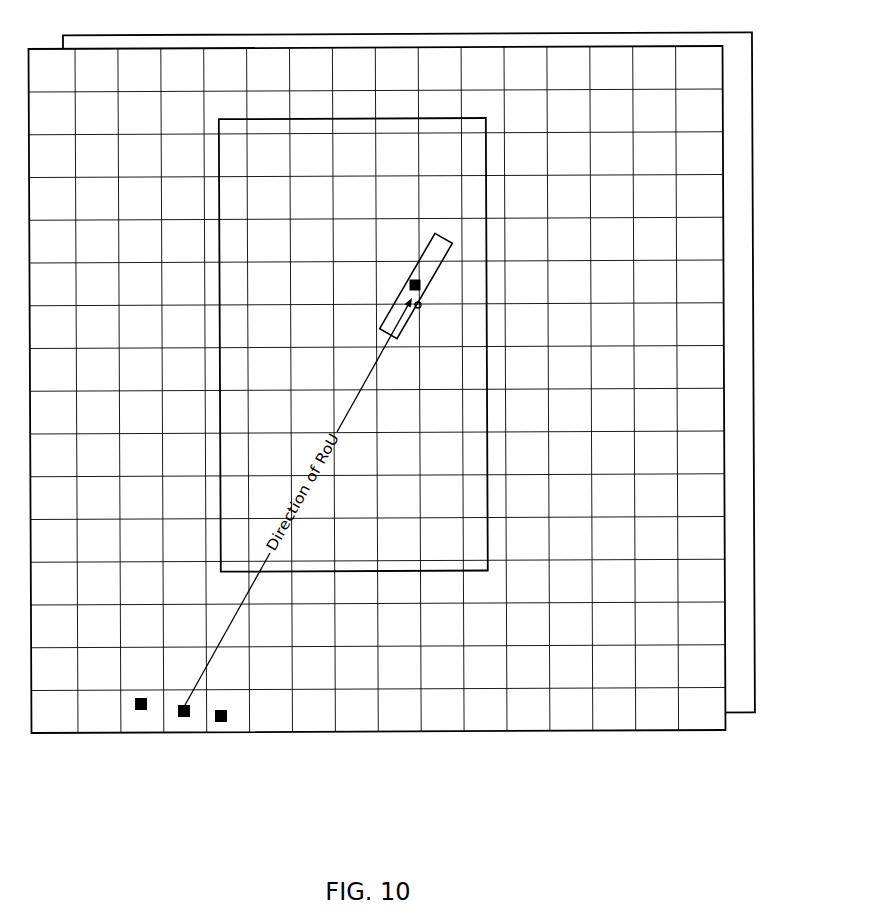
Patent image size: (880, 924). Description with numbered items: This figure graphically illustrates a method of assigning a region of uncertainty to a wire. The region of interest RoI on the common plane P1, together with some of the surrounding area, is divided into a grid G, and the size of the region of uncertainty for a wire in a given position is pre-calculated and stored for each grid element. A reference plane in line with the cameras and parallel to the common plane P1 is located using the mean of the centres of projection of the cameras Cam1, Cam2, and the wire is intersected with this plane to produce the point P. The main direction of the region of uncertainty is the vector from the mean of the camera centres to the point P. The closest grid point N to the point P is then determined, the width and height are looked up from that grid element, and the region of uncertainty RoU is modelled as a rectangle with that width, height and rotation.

The grid G is at (129, 158).
The region of interest RoI is at (353, 345).
The region of uncertainty RoU is at (416, 285).
The point P is at (409, 282).
The closest grid point N is at (434, 312).
The camera Cam1 is at (117, 693).
The camera Cam2 is at (240, 702).
The common plane P1 is at (739, 725).